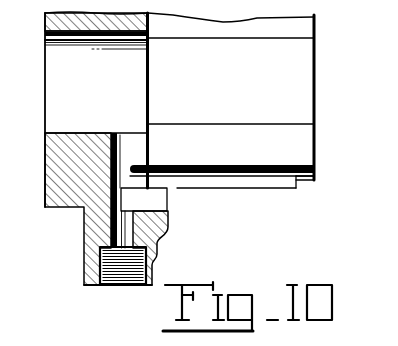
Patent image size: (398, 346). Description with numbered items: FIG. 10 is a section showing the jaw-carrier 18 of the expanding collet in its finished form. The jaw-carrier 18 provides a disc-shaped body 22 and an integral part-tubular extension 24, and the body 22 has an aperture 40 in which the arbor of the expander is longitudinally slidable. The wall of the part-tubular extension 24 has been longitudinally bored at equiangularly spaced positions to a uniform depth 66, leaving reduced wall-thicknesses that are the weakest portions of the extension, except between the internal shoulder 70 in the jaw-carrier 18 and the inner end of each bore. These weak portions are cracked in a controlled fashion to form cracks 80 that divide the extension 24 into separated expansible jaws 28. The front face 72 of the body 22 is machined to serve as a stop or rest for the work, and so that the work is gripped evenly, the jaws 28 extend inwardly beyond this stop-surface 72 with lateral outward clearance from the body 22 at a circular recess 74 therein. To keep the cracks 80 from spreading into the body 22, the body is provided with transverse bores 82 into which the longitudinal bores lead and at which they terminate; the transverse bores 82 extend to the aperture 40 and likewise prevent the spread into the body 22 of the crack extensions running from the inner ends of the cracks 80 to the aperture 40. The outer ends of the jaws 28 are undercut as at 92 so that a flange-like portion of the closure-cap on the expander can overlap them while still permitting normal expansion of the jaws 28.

The jaw-carrier 18 is at (192, 208).
The body 22 is at (58, 183).
The part-tubular extension 24 is at (314, 146).
The expansible jaws 28 is at (307, 30).
The aperture 40 is at (62, 132).
The uniform depth 66 is at (163, 168).
The internal shoulder 70 is at (147, 146).
The front face 72 is at (168, 226).
The circular recess 74 is at (140, 200).
The cracks 80 is at (290, 38).
The transverse bores 82 is at (126, 158).
The undercut 92 is at (308, 178).